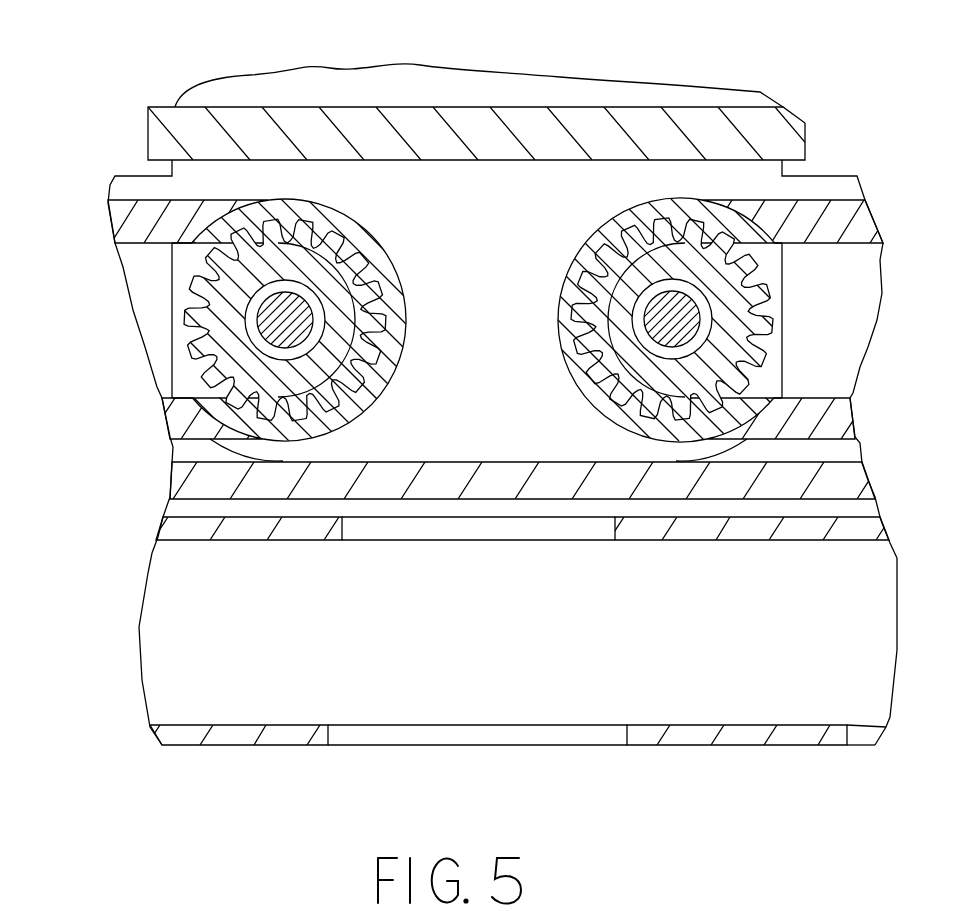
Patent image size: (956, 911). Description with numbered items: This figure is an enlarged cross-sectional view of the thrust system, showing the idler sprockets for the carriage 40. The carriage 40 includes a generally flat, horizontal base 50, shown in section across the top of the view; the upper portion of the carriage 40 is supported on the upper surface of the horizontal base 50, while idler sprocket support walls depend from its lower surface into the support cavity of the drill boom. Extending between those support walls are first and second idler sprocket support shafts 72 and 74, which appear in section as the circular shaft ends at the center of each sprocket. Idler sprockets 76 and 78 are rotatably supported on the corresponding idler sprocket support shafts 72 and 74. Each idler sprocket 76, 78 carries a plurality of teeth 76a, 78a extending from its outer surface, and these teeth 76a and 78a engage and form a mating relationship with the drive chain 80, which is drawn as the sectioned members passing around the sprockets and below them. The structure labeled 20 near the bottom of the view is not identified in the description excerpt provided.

The base plate 20 is at (272, 752).
The carriage 40 is at (675, 93).
The horizontal base 50 is at (173, 120).
The first idler sprocket support shaft 72 is at (283, 303).
The second idler sprocket support shaft 74 is at (657, 307).
The idler sprocket 76 is at (228, 355).
The teeth 76a is at (284, 400).
The idler sprocket 78 is at (702, 382).
The teeth 78a is at (648, 400).
The drive chain 80 is at (135, 213).